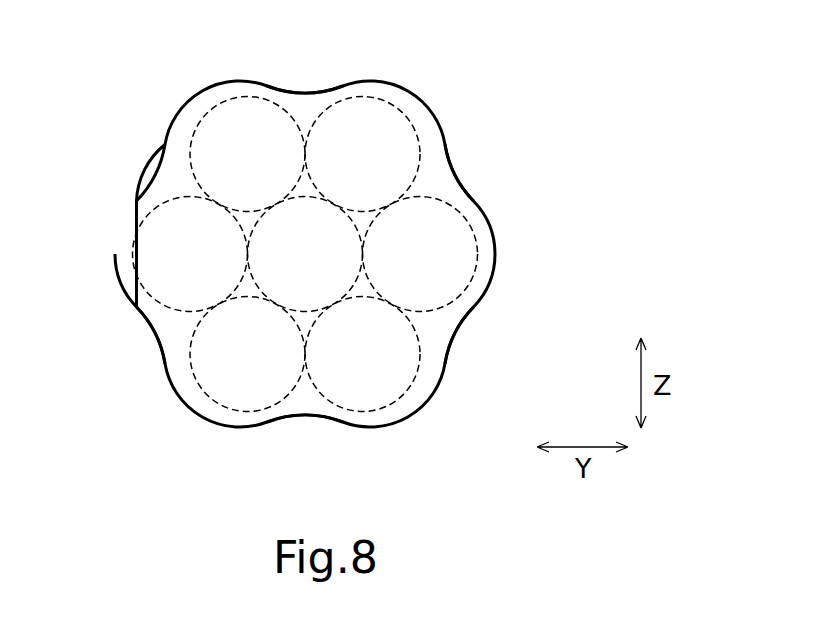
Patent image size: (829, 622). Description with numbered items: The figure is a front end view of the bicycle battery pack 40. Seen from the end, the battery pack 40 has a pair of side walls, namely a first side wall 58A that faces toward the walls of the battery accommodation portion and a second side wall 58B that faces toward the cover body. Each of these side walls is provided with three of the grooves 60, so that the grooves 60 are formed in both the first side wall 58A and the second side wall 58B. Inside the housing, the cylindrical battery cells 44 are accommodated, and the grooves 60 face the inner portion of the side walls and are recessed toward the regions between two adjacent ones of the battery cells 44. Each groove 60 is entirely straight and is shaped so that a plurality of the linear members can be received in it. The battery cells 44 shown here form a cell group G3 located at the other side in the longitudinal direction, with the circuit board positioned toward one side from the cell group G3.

The battery pack 40 is at (325, 251).
The battery cells 44 is at (229, 98).
The first side wall 58A is at (368, 86).
The second side wall 58B is at (216, 412).
The grooves 60 is at (304, 92).
The cell group G3 is at (325, 252).